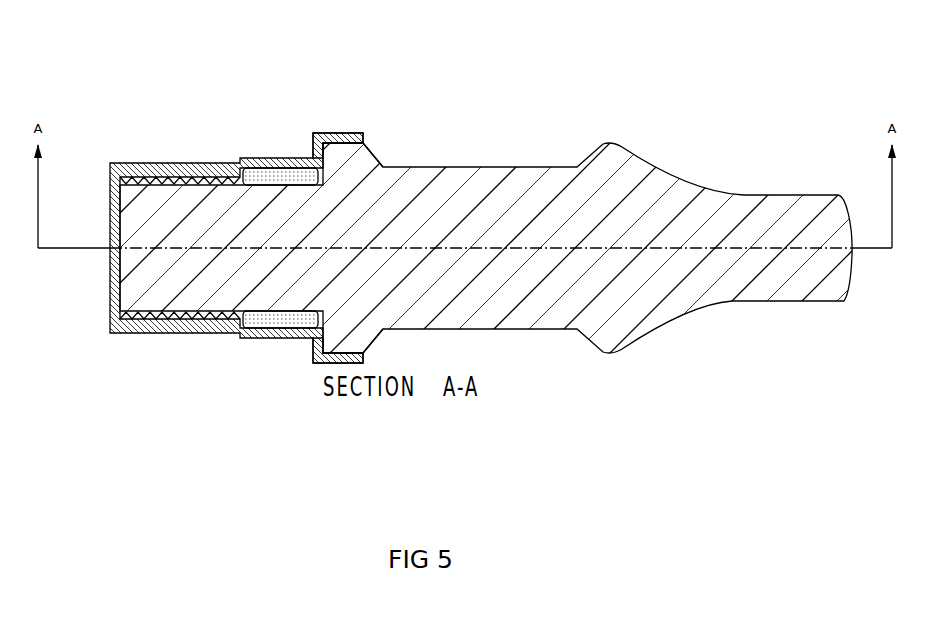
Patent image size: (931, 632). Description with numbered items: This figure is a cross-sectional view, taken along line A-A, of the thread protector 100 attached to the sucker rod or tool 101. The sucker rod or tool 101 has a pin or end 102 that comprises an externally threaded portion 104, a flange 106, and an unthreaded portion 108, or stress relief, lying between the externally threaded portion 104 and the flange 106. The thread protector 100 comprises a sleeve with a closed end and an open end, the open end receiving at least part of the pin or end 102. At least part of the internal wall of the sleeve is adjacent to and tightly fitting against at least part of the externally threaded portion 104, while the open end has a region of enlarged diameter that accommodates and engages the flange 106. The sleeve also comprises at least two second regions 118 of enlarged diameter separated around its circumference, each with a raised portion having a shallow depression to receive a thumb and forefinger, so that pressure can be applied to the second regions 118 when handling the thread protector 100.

The thread protector 100 is at (210, 120).
The sucker rod or tool 101 is at (535, 118).
The pin or end 102 is at (263, 275).
The externally threaded portion 104 is at (165, 320).
The flange 106 is at (352, 165).
The unthreaded portion 108 is at (283, 180).
The second regions 118 is at (302, 152).